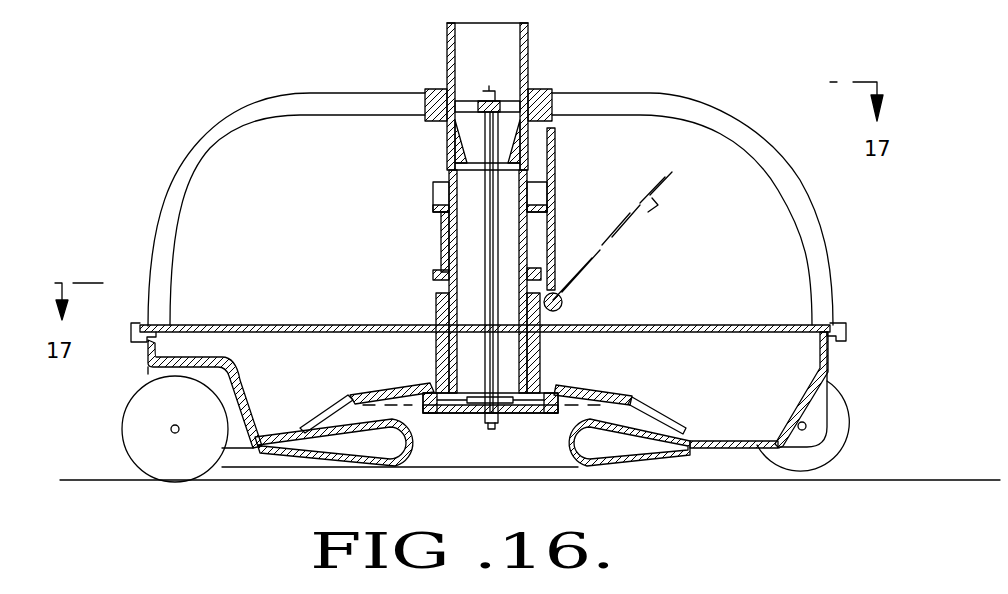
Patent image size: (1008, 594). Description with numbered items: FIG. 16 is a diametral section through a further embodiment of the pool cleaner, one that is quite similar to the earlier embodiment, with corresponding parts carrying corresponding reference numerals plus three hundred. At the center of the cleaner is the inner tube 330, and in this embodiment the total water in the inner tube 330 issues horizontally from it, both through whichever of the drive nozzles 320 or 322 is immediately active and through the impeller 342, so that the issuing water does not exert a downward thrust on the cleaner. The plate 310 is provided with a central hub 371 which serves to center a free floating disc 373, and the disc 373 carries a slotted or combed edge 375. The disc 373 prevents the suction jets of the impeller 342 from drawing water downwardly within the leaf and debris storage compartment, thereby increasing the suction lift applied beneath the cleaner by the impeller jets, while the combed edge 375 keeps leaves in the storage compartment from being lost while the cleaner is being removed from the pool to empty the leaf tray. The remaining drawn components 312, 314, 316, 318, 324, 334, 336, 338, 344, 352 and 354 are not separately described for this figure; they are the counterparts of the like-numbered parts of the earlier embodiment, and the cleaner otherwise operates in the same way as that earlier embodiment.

The plate 310 is at (190, 323).
The front wheel 312 is at (130, 441).
The dome cover 314 is at (676, 103).
The mounting block 316 is at (540, 95).
The upper pipe 318 is at (450, 36).
The drive nozzle 320 is at (438, 188).
The drive nozzle 322 is at (470, 98).
The lower bracket 324 is at (440, 276).
The inner tube 330 is at (553, 228).
The central rod 334 is at (478, 398).
The inner tube 336 is at (488, 234).
The sleeve 338 is at (438, 206).
The impeller 342 is at (506, 418).
The handle bar 344 is at (556, 160).
The rear wheel 352 is at (780, 448).
The spring loop 354 is at (405, 450).
The central hub 371 is at (556, 367).
The free floating disc 373 is at (612, 395).
The slotted or combed edge 375 is at (665, 422).